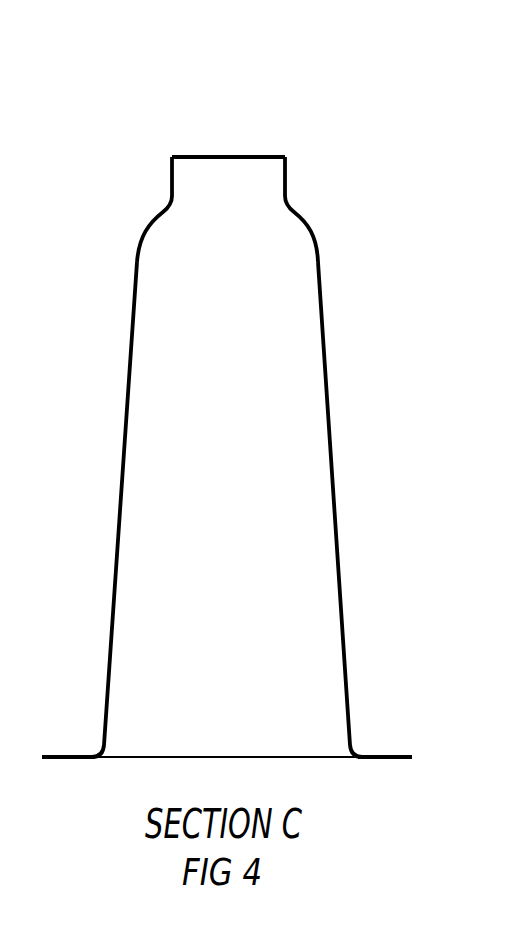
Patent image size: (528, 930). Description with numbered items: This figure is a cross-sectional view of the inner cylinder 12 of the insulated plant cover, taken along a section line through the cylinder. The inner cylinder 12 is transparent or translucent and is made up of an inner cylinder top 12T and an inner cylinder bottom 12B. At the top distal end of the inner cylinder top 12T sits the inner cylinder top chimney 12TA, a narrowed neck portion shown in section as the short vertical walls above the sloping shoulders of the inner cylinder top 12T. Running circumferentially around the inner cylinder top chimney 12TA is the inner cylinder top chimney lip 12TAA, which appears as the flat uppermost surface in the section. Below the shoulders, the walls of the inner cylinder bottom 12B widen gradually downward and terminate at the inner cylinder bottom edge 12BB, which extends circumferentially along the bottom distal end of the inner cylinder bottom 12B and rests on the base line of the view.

The inner cylinder 12 is at (312, 52).
The inner cylinder top chimney lip 12TAA is at (332, 121).
The inner cylinder top chimney 12TA is at (322, 173).
The inner cylinder top 12T is at (295, 229).
The inner cylinder bottom 12B is at (286, 509).
The inner cylinder bottom edge 12BB is at (272, 729).